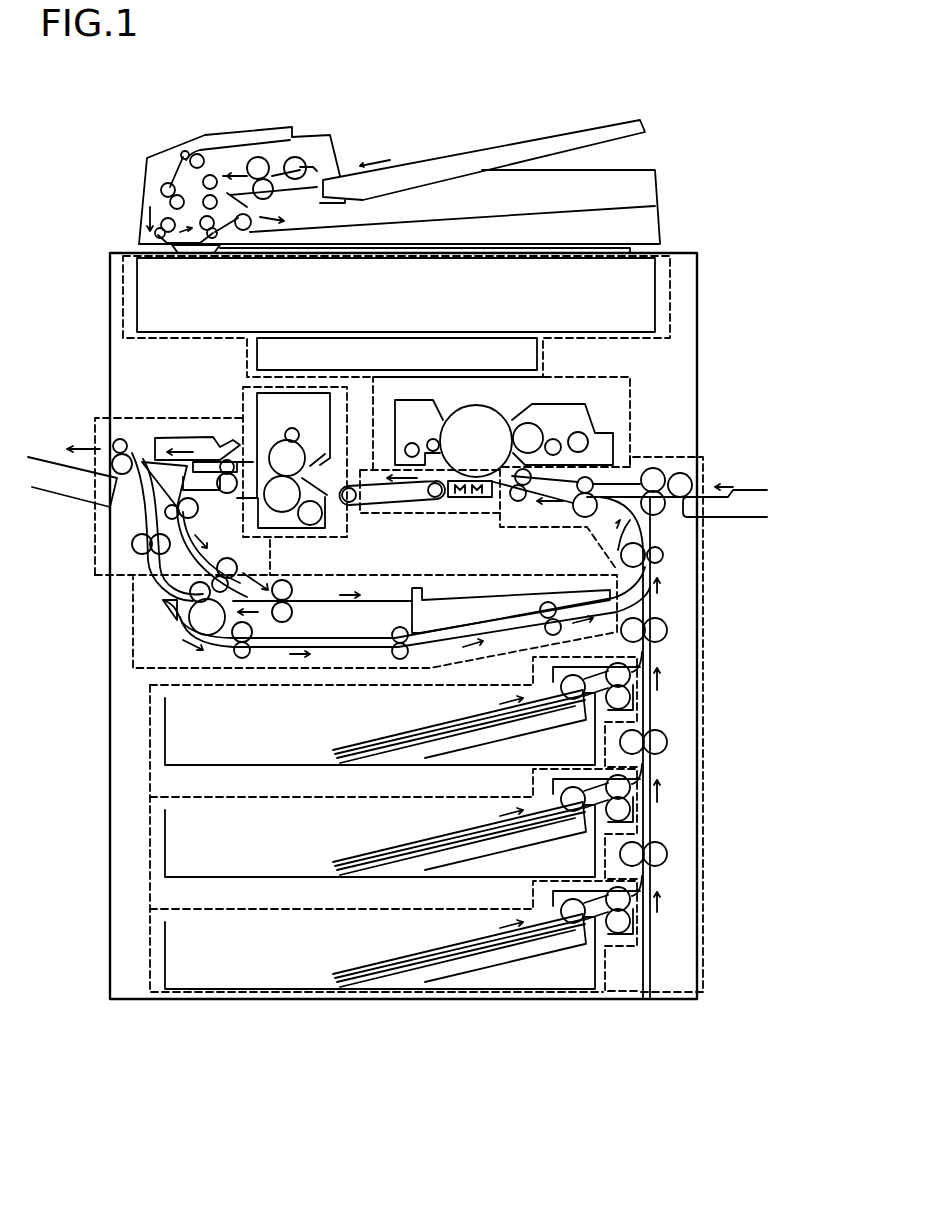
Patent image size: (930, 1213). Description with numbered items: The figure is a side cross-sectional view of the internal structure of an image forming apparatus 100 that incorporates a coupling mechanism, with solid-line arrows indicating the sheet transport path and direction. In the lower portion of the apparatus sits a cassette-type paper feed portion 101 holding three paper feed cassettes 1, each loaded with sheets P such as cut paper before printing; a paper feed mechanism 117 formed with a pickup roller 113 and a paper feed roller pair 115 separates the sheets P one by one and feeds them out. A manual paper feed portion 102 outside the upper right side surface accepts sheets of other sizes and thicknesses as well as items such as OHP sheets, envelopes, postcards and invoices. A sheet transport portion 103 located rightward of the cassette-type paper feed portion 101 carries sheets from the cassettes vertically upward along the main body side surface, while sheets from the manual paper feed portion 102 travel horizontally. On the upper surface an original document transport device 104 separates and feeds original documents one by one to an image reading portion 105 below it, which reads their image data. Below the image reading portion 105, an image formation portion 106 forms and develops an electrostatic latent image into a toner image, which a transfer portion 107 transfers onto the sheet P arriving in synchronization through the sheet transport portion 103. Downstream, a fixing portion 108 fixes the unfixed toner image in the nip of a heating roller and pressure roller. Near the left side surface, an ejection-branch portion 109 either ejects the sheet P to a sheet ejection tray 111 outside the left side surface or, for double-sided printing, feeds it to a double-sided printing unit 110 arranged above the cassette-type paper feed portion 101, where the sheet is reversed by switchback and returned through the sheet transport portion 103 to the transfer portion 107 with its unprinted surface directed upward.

The image forming apparatus 100 is at (693, 138).
The cassette-type paper feed portion 101 is at (150, 960).
The manual paper feed portion 102 is at (750, 518).
The sheet transport portion 103 is at (662, 456).
The original document transport device 104 is at (442, 156).
The image reading portion 105 is at (670, 320).
The image formation portion 106 is at (573, 377).
The transfer portion 107 is at (451, 513).
The fixing portion 108 is at (240, 400).
The ejection-branch portion 109 is at (150, 418).
The double-sided printing unit 110 is at (133, 600).
The sheet ejection tray 111 is at (38, 493).
The pickup roller 113 is at (664, 875).
The paper feed roller pair 115 is at (714, 880).
The paper feed mechanism 117 is at (685, 856).
The paper feed cassette 1 is at (165, 728).
The sheet P is at (459, 991).